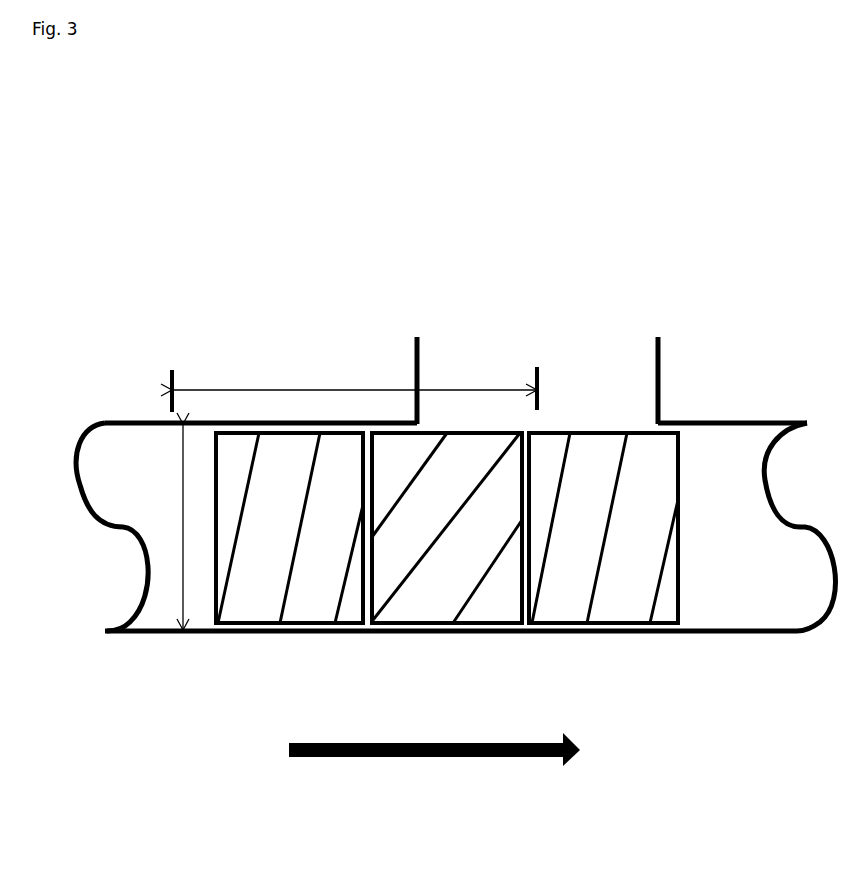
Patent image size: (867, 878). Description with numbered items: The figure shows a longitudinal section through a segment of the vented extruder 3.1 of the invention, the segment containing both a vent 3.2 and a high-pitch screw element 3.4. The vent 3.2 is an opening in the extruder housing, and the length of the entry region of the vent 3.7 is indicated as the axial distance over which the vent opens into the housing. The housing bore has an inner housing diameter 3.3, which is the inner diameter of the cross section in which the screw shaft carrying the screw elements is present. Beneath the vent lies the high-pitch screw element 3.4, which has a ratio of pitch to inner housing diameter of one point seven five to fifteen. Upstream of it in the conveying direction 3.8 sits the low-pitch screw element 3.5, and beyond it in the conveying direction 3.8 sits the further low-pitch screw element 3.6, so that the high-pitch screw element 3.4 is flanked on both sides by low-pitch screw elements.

The segment of the vented extruder 3.1 is at (429, 260).
The vent 3.2 is at (588, 373).
The inner housing diameter 3.3 is at (183, 517).
The high-pitch screw element 3.4 is at (448, 595).
The low-pitch screw element upstream of the high-pitch screw element 3.5 is at (267, 585).
The low-pitch screw element beyond the high-pitch screw element 3.6 is at (623, 602).
The length of the entry region of the vent 3.7 is at (352, 388).
The conveying direction 3.8 is at (445, 762).